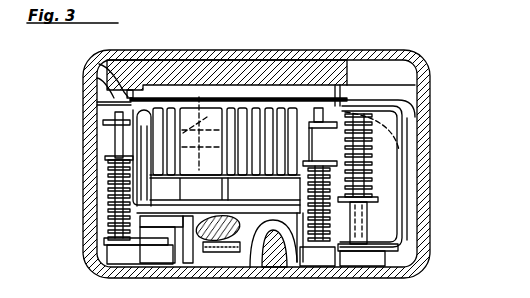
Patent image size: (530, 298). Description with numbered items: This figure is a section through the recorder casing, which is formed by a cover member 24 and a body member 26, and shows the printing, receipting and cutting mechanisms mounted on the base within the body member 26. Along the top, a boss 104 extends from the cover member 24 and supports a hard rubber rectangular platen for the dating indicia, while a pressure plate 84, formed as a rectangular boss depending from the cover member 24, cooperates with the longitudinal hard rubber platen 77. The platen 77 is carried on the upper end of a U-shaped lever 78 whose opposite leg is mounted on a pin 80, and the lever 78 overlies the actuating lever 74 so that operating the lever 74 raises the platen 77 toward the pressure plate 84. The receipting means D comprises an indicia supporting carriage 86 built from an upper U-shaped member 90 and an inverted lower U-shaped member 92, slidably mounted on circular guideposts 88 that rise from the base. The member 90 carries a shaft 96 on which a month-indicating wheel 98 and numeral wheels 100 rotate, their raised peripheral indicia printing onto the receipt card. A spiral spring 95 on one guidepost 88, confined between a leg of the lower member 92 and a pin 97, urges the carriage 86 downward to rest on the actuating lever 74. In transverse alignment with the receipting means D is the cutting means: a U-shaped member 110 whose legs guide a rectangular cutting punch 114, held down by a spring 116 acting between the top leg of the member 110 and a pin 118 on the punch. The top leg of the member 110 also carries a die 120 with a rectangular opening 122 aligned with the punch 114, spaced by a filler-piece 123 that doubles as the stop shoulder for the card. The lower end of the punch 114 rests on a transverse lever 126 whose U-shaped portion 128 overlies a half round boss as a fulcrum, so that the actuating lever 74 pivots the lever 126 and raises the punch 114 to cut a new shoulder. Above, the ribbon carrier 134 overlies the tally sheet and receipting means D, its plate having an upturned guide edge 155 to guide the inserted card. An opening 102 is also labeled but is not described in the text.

The carrier 134 is at (85, 63).
The upturned guide edge 155 is at (127, 97).
The boss 104 is at (143, 69).
The slot 102 is at (167, 88).
The shaft 96 is at (199, 96).
The receipt device D is at (207, 118).
The pressure plate 84 is at (283, 88).
The hard rubber platen 77 is at (317, 108).
The cover member 24 is at (356, 52).
The rectangular opening 122 is at (372, 92).
The die 120 is at (403, 88).
The filler-piece 123 is at (421, 99).
The body member 26 is at (425, 126).
The spring 116 is at (405, 148).
The U-shaped member 110 is at (402, 166).
The pin 118 is at (368, 203).
The rectangular cutting punch 114 is at (363, 218).
The pin 80 is at (97, 103).
The upper U-shaped member 90 is at (134, 137).
The pin 97 is at (114, 150).
The circular guidepost 88 is at (108, 160).
The indicia supporting carriage 86 is at (108, 180).
The spiral spring 95 is at (118, 198).
The lower U-shaped member 92 is at (106, 228).
The month-indicating wheel 98 is at (225, 154).
The numeral wheels 100 is at (254, 172).
The actuating lever 74 is at (200, 238).
The U-shaped lever 78 is at (250, 216).
The U-shaped portion 128 is at (268, 230).
The lever 126 is at (365, 258).